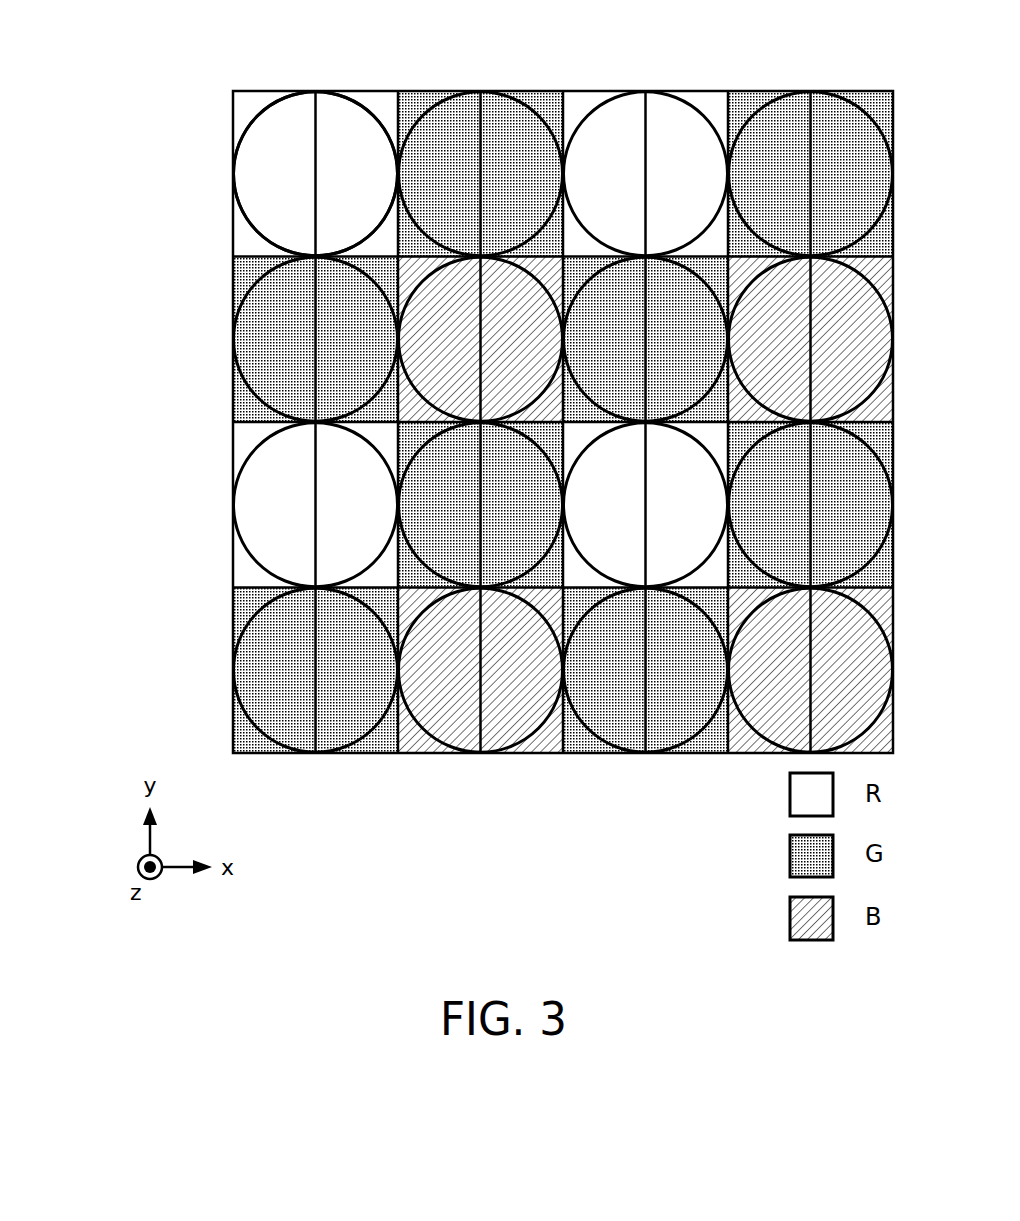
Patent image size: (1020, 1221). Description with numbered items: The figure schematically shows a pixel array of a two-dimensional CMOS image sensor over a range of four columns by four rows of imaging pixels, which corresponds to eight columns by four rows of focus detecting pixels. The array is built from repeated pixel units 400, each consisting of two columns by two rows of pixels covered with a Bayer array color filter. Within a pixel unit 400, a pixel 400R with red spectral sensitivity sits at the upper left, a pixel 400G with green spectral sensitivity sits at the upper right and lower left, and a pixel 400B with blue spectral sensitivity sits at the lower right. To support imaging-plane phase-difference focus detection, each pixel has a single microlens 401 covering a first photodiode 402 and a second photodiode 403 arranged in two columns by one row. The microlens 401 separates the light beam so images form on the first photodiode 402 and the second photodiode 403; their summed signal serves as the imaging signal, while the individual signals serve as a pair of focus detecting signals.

The pixel unit 400 is at (117, 135).
The pixel having R (red) spectral sensitivity 400R is at (253, 181).
The pixel having G (green) spectral sensitivity 400G is at (253, 331).
The pixel having B (blue) spectral sensitivity 400B is at (442, 382).
The microlens 401 is at (278, 100).
The first photodiode 402 is at (780, 118).
The second photodiode 403 is at (837, 118).